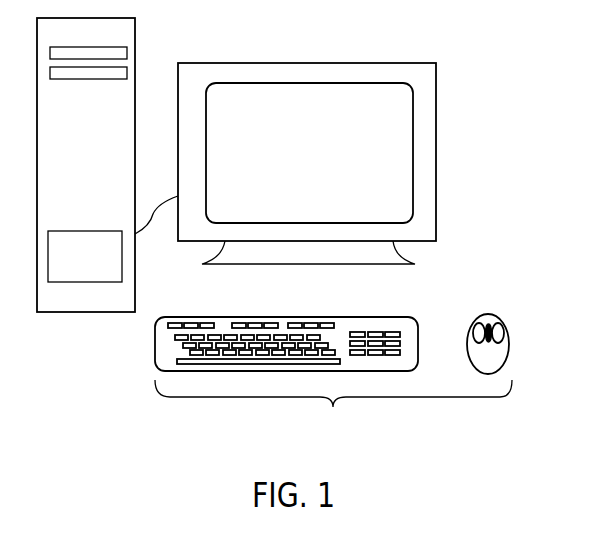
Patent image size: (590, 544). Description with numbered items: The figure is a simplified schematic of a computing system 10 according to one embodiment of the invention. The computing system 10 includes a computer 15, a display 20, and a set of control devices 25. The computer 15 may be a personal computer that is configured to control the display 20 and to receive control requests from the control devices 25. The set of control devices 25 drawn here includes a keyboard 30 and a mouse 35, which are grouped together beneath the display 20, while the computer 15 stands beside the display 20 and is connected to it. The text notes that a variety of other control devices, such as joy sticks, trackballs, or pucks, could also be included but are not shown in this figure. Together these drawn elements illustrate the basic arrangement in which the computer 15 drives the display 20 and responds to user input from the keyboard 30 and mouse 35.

The computing system 10 is at (291, 254).
The computer 15 is at (55, 325).
The display 20 is at (218, 39).
The set of control devices 25 is at (333, 413).
The keyboard 30 is at (417, 315).
The mouse 35 is at (517, 328).